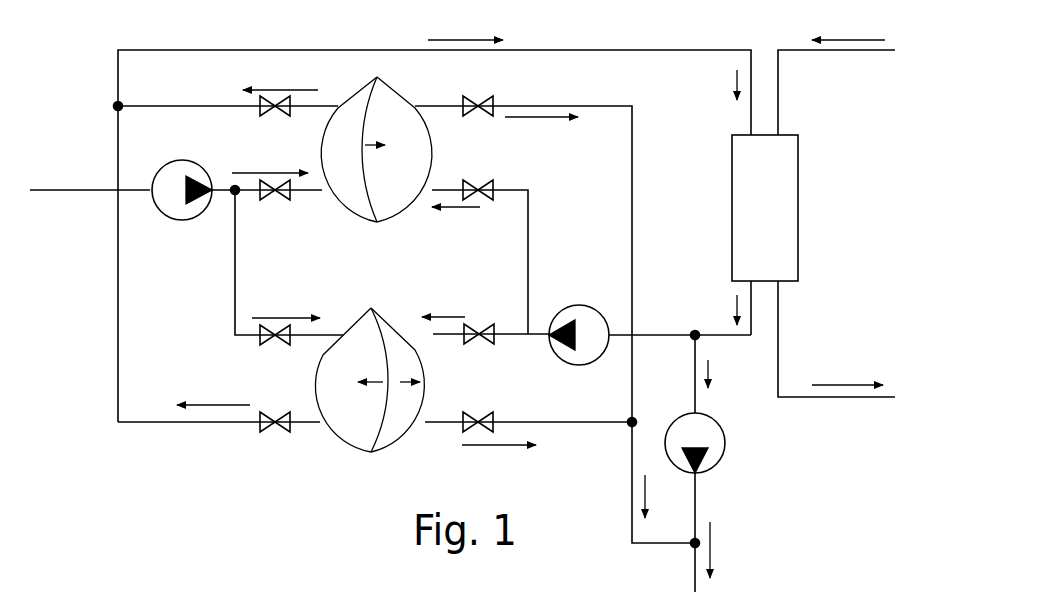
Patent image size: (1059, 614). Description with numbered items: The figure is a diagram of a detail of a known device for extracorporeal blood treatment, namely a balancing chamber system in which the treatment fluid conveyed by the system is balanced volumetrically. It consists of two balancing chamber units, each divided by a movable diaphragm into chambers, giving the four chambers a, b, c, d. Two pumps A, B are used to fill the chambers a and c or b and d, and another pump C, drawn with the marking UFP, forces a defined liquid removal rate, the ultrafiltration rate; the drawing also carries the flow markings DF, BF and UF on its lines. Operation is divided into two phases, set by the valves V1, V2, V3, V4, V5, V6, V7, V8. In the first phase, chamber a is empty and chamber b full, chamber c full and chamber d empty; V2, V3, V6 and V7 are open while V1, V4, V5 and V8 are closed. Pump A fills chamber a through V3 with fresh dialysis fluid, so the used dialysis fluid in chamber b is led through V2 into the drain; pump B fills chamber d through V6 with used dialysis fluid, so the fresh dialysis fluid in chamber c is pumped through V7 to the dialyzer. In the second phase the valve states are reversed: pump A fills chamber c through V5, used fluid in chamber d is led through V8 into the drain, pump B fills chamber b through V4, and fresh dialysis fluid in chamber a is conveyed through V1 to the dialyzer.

The pump A is at (182, 169).
The pump B is at (579, 321).
The pump C is at (699, 438).
The ultrafiltrate pump UFP is at (723, 438).
The chamber a is at (344, 149).
The chamber b is at (405, 149).
The chamber c is at (346, 380).
The chamber d is at (403, 380).
The valve V1 is at (280, 82).
The valve V2 is at (518, 86).
The valve V3 is at (270, 169).
The valve V4 is at (464, 172).
The valve V5 is at (286, 312).
The valve V6 is at (464, 313).
The valve V7 is at (235, 403).
The valve V8 is at (497, 406).
The dialysis fluid flow DF is at (465, 24).
The blood flow BF is at (848, 199).
The ultrafiltrate flow UF is at (727, 374).